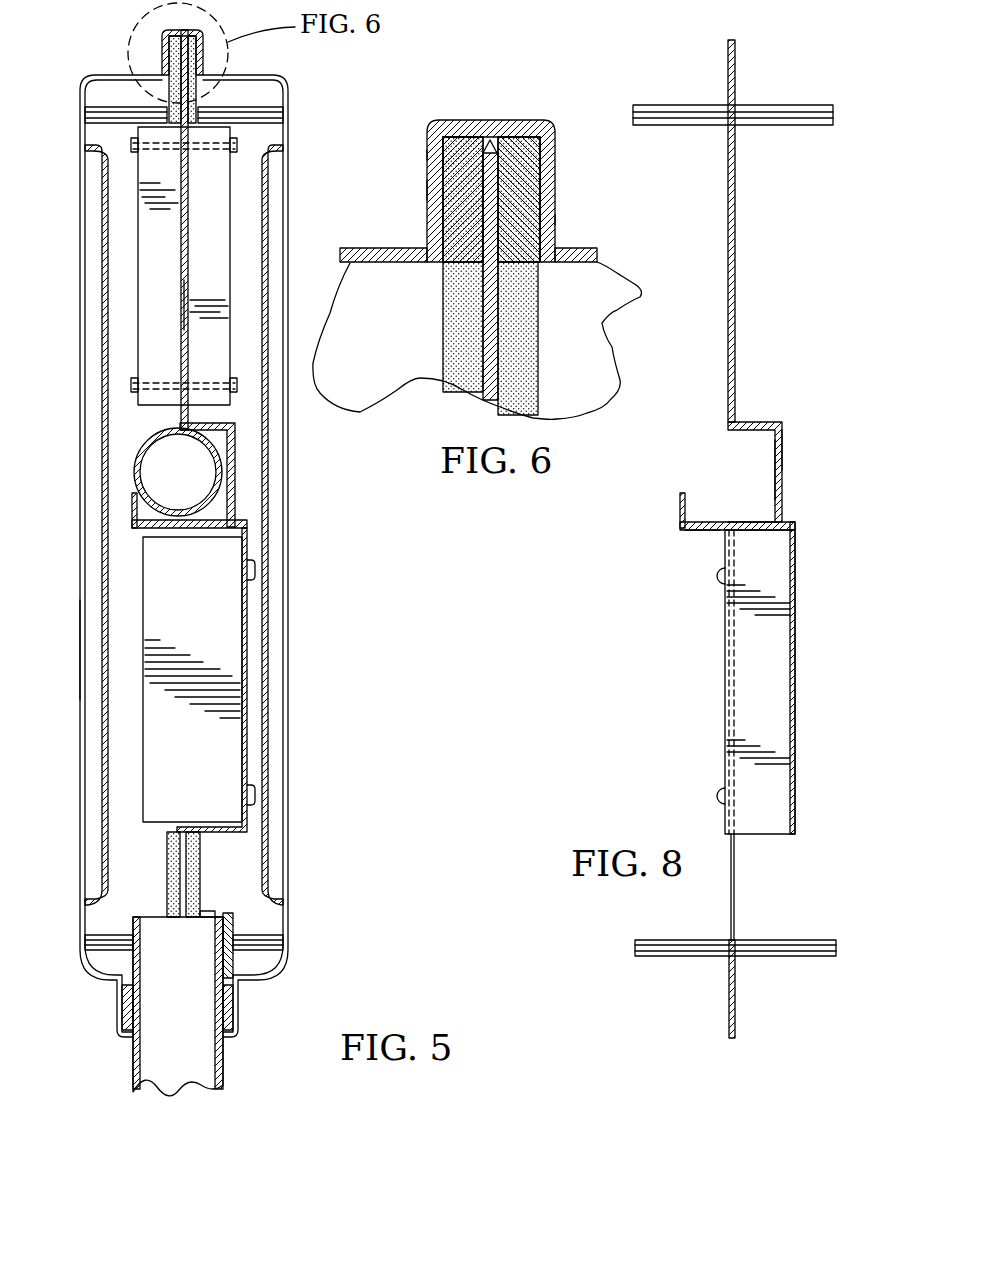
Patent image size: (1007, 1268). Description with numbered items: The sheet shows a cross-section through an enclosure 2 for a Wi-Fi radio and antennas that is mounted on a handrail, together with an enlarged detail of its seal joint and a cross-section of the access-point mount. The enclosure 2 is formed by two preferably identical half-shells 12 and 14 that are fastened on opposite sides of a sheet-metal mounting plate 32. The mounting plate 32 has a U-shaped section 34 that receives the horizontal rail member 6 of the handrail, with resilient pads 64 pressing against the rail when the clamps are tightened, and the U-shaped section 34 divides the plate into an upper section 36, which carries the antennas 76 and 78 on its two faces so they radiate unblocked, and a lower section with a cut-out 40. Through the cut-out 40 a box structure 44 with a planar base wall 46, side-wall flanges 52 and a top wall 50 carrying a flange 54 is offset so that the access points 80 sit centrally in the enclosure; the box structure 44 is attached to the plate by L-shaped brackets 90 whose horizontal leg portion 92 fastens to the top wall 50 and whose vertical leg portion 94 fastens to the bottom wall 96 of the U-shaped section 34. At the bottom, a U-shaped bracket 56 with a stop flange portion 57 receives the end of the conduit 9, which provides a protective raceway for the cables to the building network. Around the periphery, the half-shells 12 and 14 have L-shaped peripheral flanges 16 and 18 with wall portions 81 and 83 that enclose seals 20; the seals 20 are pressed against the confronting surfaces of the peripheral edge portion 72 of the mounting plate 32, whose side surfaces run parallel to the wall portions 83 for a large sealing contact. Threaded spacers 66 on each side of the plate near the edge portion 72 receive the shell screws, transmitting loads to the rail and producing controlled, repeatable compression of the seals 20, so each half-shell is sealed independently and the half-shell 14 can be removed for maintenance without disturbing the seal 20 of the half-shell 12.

In FIG. 5, the enclosure 2 is at (273, 640).
In FIG. 5, the horizontal rail member 6 is at (138, 455).
In FIG. 5, the conduit 9 is at (132, 1065).
In FIG. 5, the half-shell 12 is at (272, 700).
In FIG. 6, the half-shell 12 is at (608, 262).
In FIG. 5, the half-shell 14 is at (78, 706).
In FIG. 6, the half-shell 14 is at (371, 412).
In FIG. 6, the peripheral flange 16 is at (553, 185).
In FIG. 6, the peripheral flange 18 is at (425, 190).
In FIG. 5, the seal 20 is at (165, 45).
In FIG. 6, the seal 20 is at (468, 150).
In FIG. 5, the mounting plate 32 is at (190, 267).
In FIG. 6, the mounting plate 32 is at (503, 367).
In FIG. 8, the mounting plate 32 is at (740, 250).
In FIG. 5, the U-shaped section 34 is at (243, 495).
In FIG. 5, the upper section 36 is at (183, 305).
In FIG. 8, the cut-out 40 is at (738, 860).
In FIG. 5, the box structure 44 is at (140, 527).
In FIG. 8, the box structure 44 is at (798, 580).
In FIG. 5, the planar base wall 46 is at (245, 735).
In FIG. 8, the planar base wall 46 is at (797, 660).
In FIG. 8, the top wall 50 is at (700, 530).
In FIG. 8, the flanges 52 is at (722, 680).
In FIG. 5, the flange 54 is at (133, 507).
In FIG. 8, the flange 54 is at (680, 507).
In FIG. 5, the U-shaped bracket 56 is at (237, 950).
In FIG. 5, the flange portion 57 is at (214, 912).
In FIG. 5, the resilient pads 64 is at (218, 960).
In FIG. 5, the threaded spacers 66 is at (100, 112).
In FIG. 8, the threaded spacers 66 is at (675, 108).
In FIG. 6, the peripheral edge portion 72 is at (530, 190).
In FIG. 5, the antenna 76 is at (150, 222).
In FIG. 5, the antenna 78 is at (208, 200).
In FIG. 5, the access points 80 is at (150, 605).
In FIG. 6, the wall portion 81 is at (440, 132).
In FIG. 6, the wall portion 83 is at (428, 155).
In FIG. 8, the L-shaped brackets 90 is at (786, 490).
In FIG. 8, the horizontal leg portion 92 is at (735, 515).
In FIG. 8, the vertical leg portion 94 is at (784, 435).
In FIG. 8, the bottom wall 96 is at (775, 470).